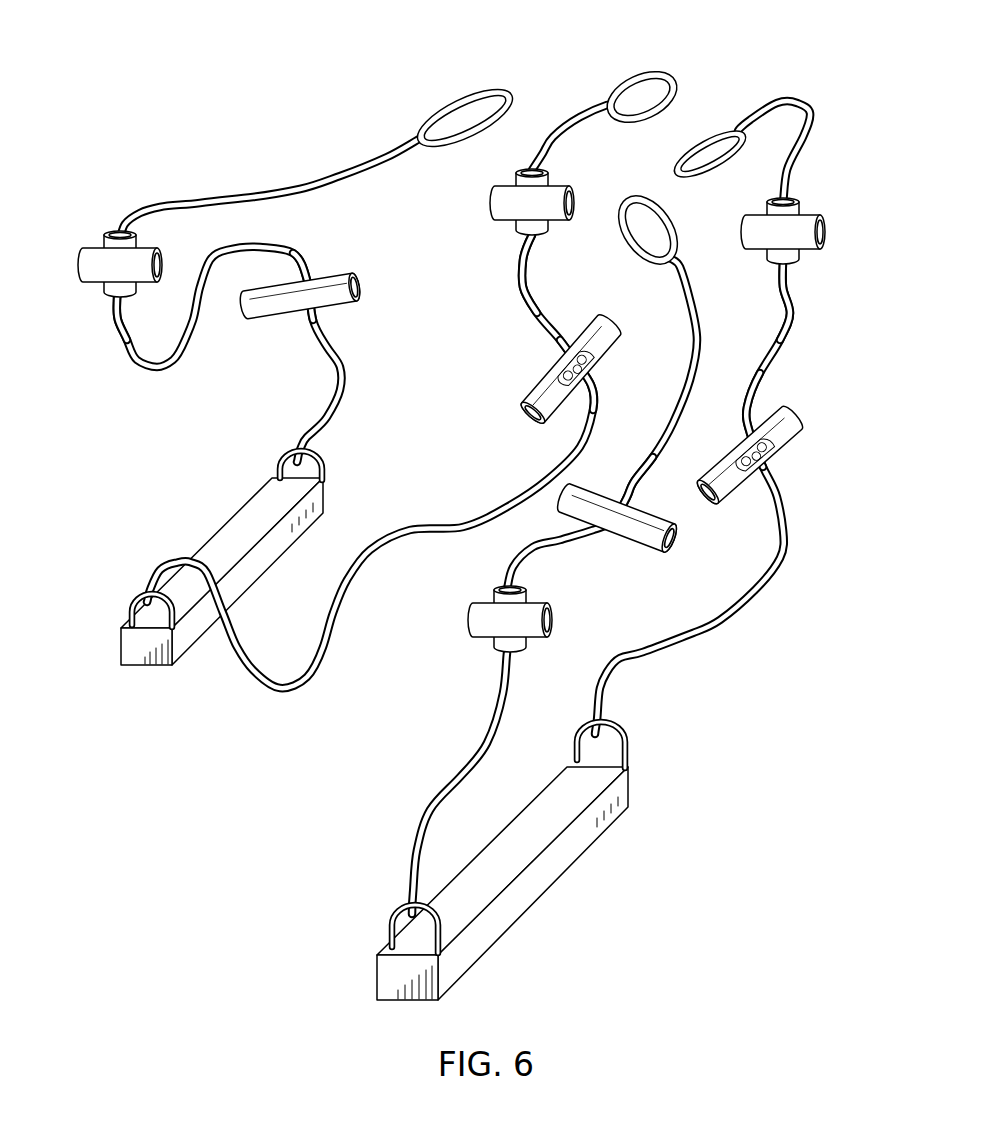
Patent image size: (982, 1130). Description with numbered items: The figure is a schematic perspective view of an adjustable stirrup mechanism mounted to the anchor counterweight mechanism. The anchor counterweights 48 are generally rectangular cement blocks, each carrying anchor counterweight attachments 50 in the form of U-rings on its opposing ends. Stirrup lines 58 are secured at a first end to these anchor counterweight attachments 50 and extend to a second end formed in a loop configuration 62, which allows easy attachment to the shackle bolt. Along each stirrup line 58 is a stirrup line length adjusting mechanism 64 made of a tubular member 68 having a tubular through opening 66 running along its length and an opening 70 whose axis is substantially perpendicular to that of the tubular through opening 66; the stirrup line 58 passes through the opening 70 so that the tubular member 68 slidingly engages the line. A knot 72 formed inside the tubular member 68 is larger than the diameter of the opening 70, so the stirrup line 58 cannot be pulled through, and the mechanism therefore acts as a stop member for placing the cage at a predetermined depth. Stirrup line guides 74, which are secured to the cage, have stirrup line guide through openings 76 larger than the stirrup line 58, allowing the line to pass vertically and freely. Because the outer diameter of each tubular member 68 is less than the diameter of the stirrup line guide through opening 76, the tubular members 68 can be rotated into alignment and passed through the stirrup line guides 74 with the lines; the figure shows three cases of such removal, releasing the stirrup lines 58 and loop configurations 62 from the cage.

The anchor counterweight 48 is at (253, 585).
The anchor counterweight attachment 50 is at (288, 450).
The stirrup line 58 is at (270, 190).
The loop configuration 62 is at (468, 90).
The stirrup line length adjusting mechanism 64 is at (538, 409).
The tubular through opening 66 is at (362, 290).
The tubular member 68 is at (322, 273).
The opening 70 is at (308, 322).
The knot 72 is at (593, 370).
The stirrup line guide 74 is at (114, 300).
The stirrup line guide through opening 76 is at (112, 234).